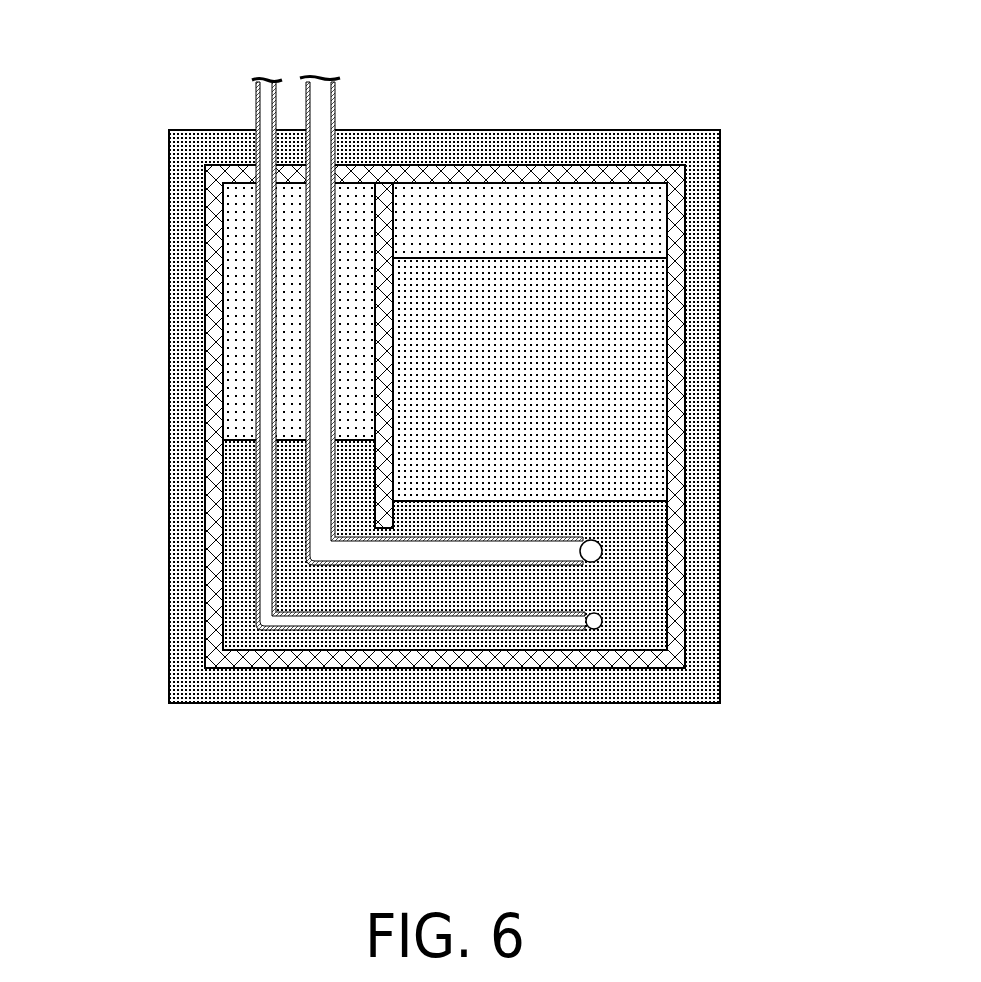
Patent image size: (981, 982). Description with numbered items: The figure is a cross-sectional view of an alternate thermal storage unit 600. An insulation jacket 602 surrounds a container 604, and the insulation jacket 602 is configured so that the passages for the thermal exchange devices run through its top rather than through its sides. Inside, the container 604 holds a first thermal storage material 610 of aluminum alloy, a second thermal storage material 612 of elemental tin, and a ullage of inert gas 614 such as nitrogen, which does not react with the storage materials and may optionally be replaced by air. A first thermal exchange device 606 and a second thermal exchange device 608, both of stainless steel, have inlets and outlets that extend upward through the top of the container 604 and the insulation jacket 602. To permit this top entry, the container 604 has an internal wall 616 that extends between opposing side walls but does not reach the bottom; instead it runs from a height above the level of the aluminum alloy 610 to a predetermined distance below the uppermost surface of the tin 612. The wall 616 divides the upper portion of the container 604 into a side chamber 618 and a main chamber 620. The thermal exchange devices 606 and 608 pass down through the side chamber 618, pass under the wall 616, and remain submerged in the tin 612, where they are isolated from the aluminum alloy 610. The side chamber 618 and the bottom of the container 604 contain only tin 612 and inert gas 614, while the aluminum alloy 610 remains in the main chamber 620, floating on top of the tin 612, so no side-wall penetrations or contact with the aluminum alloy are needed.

The thermal storage unit 600 is at (422, 351).
The insulation jacket 602 is at (700, 283).
The container 604 is at (673, 213).
The first thermal exchange device 606 is at (328, 104).
The second thermal exchange device 608 is at (268, 104).
The first thermal storage material 610 is at (618, 372).
The second thermal storage material 612 is at (638, 595).
The ullage of inert gas 614 is at (242, 210).
The internal wall 616 is at (381, 226).
The side chamber 618 is at (239, 335).
The main chamber 620 is at (608, 208).